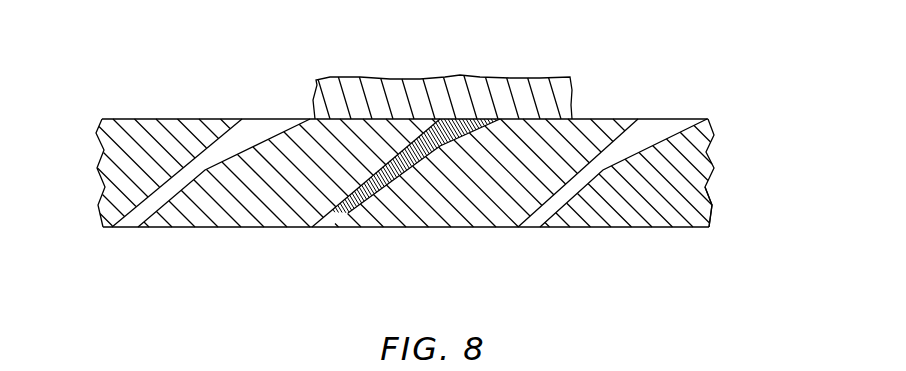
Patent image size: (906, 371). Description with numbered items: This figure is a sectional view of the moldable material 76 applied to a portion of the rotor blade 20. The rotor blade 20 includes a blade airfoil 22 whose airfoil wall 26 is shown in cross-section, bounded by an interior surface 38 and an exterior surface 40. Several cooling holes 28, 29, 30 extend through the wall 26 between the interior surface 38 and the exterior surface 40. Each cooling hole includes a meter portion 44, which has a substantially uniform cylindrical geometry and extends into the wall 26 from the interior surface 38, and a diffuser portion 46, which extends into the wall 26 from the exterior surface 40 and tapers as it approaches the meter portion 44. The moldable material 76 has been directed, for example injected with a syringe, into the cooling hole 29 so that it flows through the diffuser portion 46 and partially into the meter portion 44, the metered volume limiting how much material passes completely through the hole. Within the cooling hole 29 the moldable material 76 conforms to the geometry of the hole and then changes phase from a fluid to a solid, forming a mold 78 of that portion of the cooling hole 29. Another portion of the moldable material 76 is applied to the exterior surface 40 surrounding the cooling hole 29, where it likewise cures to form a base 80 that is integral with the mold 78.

The rotor blade 20 is at (385, 160).
The blade airfoil 22 is at (712, 160).
The airfoil wall 26 is at (712, 190).
The cooling hole 28 is at (127, 228).
The cooling hole 29 is at (336, 212).
The cooling hole 30 is at (528, 228).
The interior surface 38 is at (207, 228).
The exterior surface 40 is at (178, 119).
The meter portion 44 is at (377, 194).
The diffuser portion 46 is at (455, 140).
The moldable material 76 is at (456, 65).
The mold 78 is at (418, 162).
The base 80 is at (523, 88).